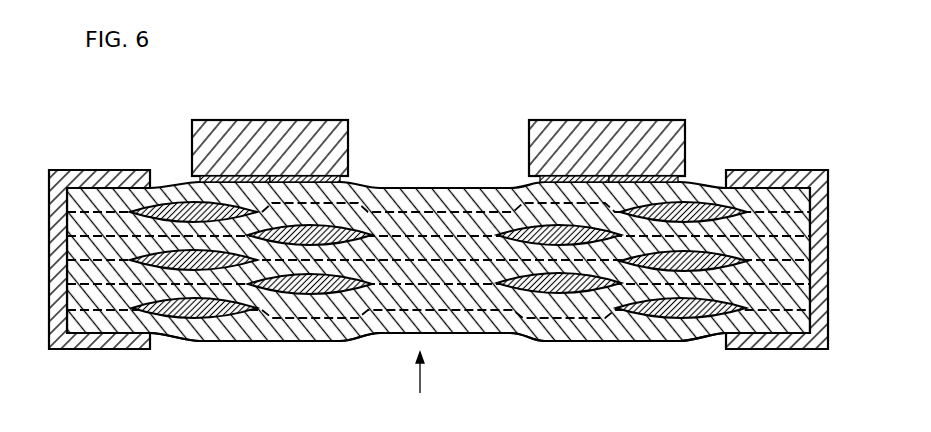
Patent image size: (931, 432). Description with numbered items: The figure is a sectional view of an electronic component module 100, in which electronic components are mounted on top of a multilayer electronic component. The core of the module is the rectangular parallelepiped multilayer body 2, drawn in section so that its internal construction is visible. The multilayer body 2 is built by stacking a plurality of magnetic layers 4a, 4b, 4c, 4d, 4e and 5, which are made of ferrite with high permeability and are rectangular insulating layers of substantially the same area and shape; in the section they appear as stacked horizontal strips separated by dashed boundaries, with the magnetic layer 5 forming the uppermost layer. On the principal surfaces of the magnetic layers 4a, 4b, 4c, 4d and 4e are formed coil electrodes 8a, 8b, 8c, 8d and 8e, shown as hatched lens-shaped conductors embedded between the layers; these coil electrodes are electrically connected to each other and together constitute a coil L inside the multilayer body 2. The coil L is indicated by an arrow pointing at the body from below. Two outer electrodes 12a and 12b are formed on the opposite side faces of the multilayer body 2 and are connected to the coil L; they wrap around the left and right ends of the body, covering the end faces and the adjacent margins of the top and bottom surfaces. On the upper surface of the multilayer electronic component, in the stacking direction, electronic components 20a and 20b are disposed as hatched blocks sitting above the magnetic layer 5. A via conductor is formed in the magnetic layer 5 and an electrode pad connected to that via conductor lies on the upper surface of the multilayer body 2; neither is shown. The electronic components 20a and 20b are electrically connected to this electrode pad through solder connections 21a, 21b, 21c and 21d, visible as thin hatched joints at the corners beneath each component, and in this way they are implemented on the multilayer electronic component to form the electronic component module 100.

The electronic component module 100 is at (449, 248).
The multilayer body 2 is at (484, 341).
The coil L is at (421, 391).
The magnetic layer 5 is at (810, 192).
The magnetic layer 4a is at (810, 221).
The magnetic layer 4b is at (810, 246).
The magnetic layer 4c is at (810, 272).
The magnetic layer 4d is at (810, 300).
The magnetic layer 4e is at (810, 327).
The coil electrode 8a is at (143, 200).
The coil electrode 8b is at (358, 229).
The coil electrode 8c is at (137, 257).
The coil electrode 8d is at (322, 295).
The coil electrode 8e is at (222, 318).
The outer electrode 12a is at (782, 350).
The outer electrode 12b is at (108, 349).
The electronic component 20a is at (315, 128).
The electronic component 20b is at (595, 128).
The solder connection 21a is at (213, 173).
The solder connection 21b is at (343, 178).
The solder connection 21c is at (550, 172).
The solder connection 21d is at (668, 172).